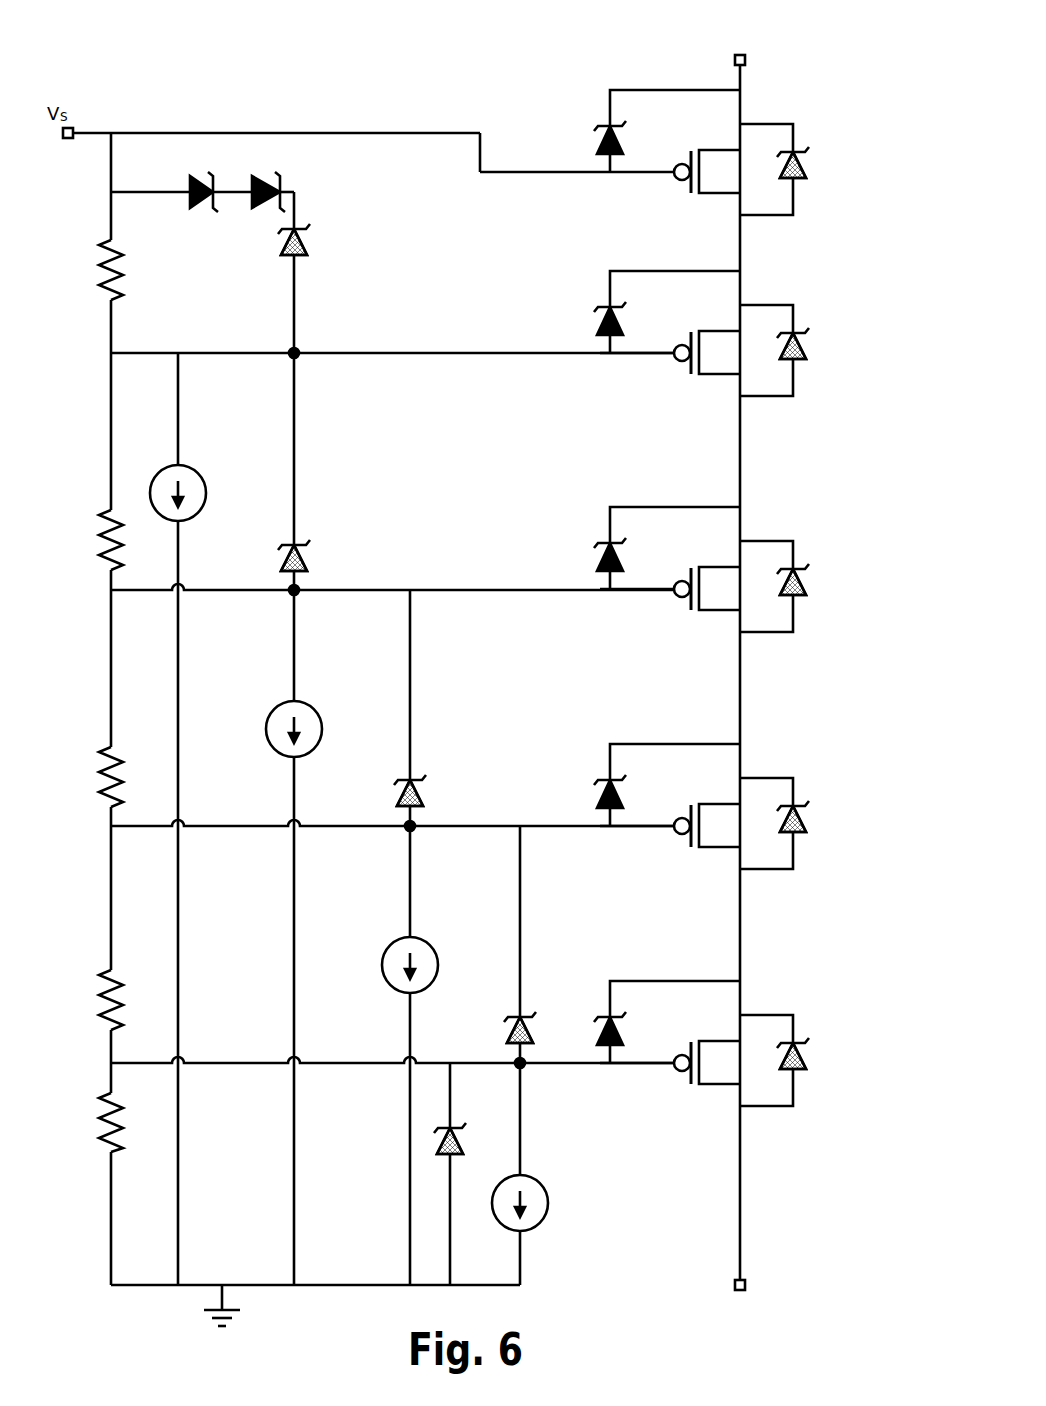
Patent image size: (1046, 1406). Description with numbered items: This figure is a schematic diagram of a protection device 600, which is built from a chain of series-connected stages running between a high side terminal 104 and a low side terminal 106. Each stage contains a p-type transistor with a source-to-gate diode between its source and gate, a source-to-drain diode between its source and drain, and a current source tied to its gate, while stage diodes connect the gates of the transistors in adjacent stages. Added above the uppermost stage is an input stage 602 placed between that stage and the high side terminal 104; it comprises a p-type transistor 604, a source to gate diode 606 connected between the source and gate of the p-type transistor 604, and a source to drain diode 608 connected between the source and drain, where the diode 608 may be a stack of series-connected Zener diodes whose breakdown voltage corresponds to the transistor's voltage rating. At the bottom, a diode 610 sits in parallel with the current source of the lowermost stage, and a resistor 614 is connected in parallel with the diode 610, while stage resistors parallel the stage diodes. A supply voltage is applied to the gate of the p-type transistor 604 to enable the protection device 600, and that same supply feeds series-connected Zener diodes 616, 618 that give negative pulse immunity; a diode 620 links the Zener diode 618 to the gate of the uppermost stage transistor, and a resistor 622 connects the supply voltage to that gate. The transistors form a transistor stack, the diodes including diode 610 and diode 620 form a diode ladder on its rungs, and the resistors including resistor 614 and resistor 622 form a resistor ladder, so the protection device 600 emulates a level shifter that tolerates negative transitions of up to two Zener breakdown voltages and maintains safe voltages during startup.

The protection device 600 is at (125, 73).
The high side terminal 104 is at (745, 57).
The low side terminal 106 is at (746, 1291).
The input stage 602 is at (688, 121).
The p-type transistor 604 is at (688, 189).
The source to gate (SG) diode 606 is at (603, 144).
The source to drain (SD) diode 608 is at (803, 162).
The diode 610 is at (458, 1138).
The resistor 614 is at (100, 1133).
The Zener diode 616 is at (197, 182).
The Zener diode 618 is at (272, 181).
The diode 620 is at (307, 245).
The resistor 622 is at (100, 282).